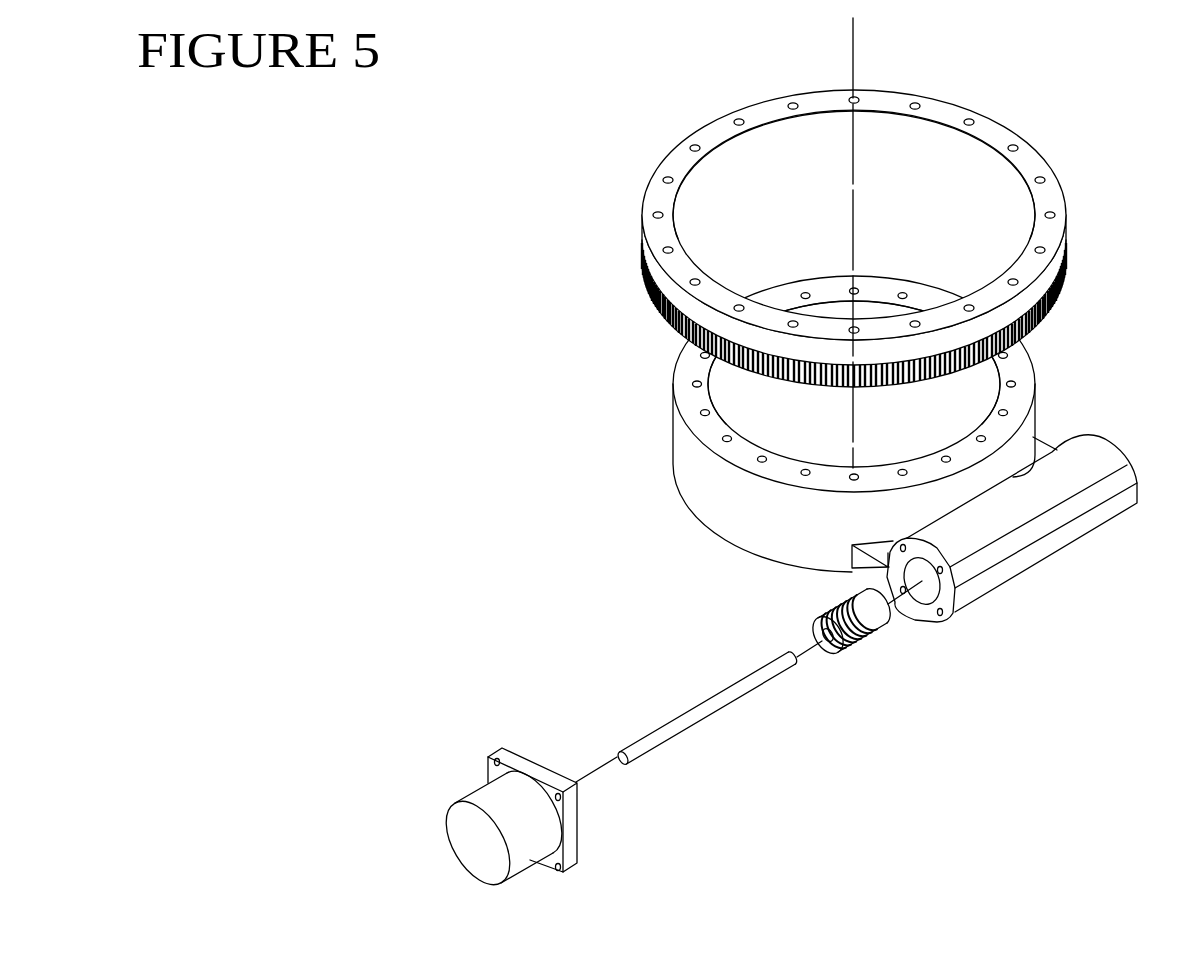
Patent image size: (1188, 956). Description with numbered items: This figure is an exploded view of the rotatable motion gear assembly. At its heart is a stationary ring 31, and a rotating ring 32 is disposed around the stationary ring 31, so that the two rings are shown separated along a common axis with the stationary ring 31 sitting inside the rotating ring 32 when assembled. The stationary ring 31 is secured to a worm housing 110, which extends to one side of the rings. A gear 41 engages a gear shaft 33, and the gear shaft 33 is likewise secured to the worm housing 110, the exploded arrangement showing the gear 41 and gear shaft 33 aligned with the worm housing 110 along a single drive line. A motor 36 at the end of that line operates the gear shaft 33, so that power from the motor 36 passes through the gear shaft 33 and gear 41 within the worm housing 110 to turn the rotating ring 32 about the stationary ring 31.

The stationary ring 31 is at (673, 397).
The rotating ring 32 is at (1027, 141).
The gear shaft 33 is at (720, 688).
The motor 36 is at (464, 803).
The gear 41 is at (858, 642).
The worm housing 110 is at (1093, 433).